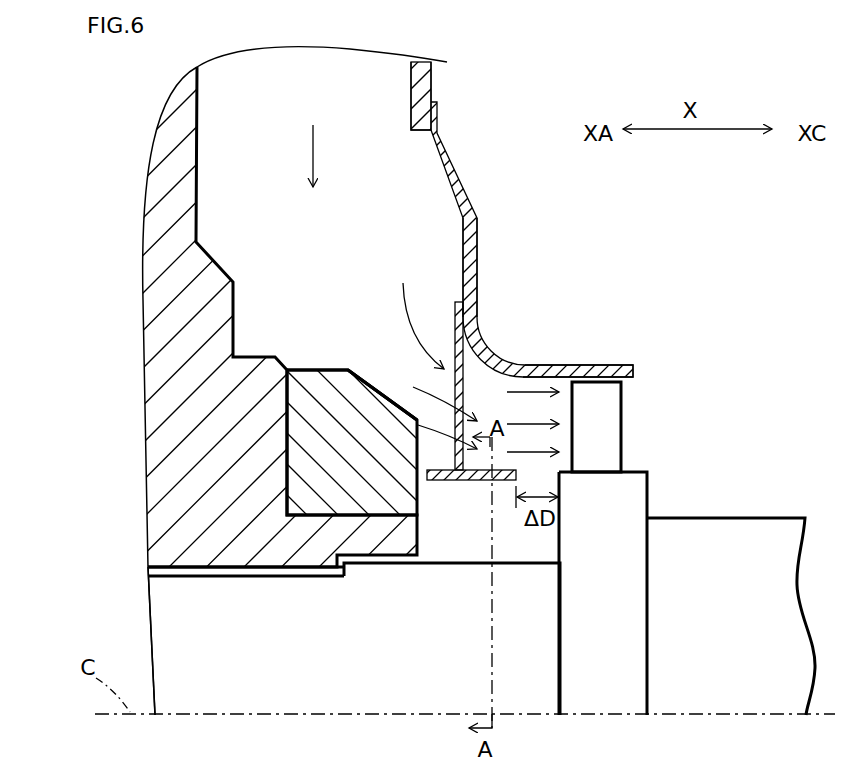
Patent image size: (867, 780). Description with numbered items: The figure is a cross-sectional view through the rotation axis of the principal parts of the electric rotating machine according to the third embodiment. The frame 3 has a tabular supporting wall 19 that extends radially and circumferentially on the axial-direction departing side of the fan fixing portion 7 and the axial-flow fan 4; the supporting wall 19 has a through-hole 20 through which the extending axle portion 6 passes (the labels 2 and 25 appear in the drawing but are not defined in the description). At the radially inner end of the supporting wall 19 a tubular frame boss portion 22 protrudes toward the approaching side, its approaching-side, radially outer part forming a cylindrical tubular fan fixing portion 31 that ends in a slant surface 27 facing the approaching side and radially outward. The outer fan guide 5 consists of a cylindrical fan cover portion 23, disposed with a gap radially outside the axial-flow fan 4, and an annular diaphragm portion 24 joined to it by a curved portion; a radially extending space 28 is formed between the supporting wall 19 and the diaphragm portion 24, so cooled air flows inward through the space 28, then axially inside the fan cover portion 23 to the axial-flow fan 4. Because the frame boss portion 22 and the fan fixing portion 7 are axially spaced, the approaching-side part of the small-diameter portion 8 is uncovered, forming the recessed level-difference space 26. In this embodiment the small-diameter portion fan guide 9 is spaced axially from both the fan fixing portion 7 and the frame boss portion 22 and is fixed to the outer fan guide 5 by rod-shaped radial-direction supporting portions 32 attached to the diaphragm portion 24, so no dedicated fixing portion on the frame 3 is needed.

The turbine 2 is at (703, 512).
The frame 3 is at (199, 142).
The axial-flow fan 4 is at (613, 420).
The outer fan guide 5 is at (479, 248).
The extending axle portion 6 is at (731, 580).
The fan fixing portion 7 is at (628, 492).
The small-diameter portion 8 is at (507, 578).
The small-diameter portion fan guide 9 is at (448, 481).
The supporting wall 19 is at (173, 205).
The through-hole 20 is at (131, 617).
The frame boss portion 22 is at (303, 366).
The fan cover portion 23 is at (582, 370).
The diaphragm portion 24 is at (468, 200).
The mounting portion 25 is at (411, 72).
The level-difference space 26 is at (458, 554).
The slant surface 27 is at (382, 395).
The space 28 is at (382, 181).
The fan fixing portion 31 is at (322, 387).
The radial-direction supporting portion 32 is at (462, 352).